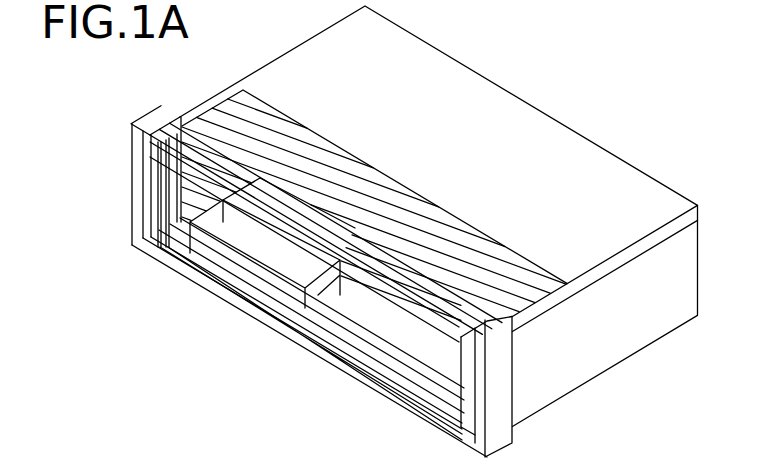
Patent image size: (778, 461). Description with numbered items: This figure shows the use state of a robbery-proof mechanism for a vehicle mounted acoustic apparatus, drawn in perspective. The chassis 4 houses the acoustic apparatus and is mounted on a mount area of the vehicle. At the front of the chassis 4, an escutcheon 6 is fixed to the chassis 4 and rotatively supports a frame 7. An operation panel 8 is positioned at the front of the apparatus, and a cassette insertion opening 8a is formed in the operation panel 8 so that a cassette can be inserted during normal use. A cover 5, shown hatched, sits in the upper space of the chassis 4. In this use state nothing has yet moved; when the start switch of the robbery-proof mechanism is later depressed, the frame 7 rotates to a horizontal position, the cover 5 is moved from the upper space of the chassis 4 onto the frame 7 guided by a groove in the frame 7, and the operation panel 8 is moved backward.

The chassis 4 is at (300, 65).
The cover 5 is at (375, 180).
The escutcheon 6 is at (150, 124).
The frame 7 is at (152, 185).
The operation panel 8 is at (497, 377).
The cassette insertion opening 8a is at (267, 240).